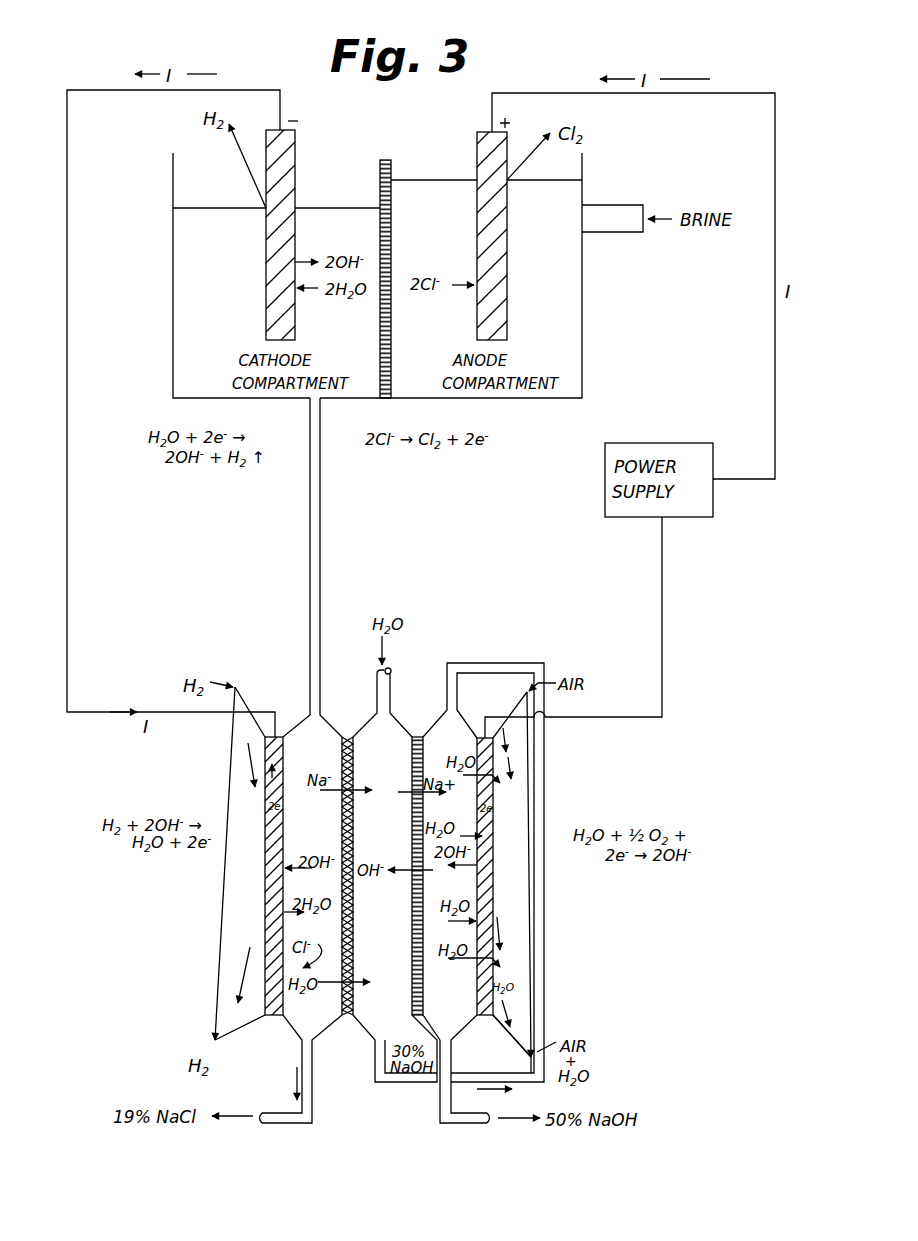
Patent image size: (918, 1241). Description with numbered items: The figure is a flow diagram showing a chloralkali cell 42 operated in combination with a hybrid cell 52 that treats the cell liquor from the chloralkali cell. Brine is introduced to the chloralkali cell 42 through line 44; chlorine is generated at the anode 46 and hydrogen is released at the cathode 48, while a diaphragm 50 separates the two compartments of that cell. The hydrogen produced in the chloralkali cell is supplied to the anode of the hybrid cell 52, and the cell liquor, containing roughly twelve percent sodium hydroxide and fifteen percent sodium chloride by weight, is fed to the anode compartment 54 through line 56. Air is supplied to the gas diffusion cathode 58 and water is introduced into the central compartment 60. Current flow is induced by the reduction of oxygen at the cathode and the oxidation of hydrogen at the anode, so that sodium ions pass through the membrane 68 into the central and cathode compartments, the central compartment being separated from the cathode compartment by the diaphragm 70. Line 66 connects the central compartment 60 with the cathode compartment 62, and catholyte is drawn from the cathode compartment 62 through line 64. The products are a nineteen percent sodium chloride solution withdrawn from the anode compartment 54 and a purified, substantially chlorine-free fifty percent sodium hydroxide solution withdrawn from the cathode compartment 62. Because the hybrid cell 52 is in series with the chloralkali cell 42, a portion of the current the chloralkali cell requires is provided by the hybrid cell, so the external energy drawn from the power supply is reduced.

The chloralkali cell 42 is at (583, 343).
The line 44 is at (645, 200).
The anode 46 is at (505, 291).
The cathode 48 is at (288, 327).
The diaphragm 50 is at (391, 347).
The hybrid cell 52 is at (548, 952).
The anode compartment 54 is at (293, 1025).
The line 56 is at (321, 553).
The gas diffusion cathode 58 is at (483, 938).
The central compartment 60 is at (360, 1023).
The cathode compartment 62 is at (462, 1035).
The line 64 is at (465, 1122).
The line 66 is at (541, 998).
The membrane 68 is at (353, 908).
The diaphragm 70 is at (410, 943).